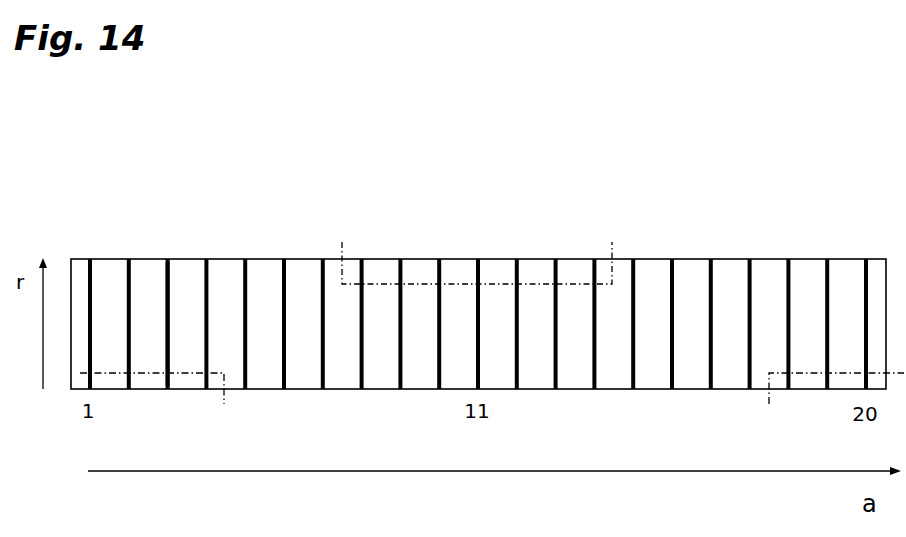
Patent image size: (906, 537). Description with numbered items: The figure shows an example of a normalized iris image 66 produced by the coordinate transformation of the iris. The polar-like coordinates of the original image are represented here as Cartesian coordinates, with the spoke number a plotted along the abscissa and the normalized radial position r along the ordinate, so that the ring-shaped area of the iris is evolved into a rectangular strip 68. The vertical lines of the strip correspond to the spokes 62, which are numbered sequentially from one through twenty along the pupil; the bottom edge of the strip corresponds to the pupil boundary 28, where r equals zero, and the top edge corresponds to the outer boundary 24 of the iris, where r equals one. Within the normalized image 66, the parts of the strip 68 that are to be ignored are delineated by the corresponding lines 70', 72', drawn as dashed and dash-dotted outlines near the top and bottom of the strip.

The outer boundary of the iris 24 is at (230, 258).
The pupil boundary 28 is at (346, 391).
The spoke 62 is at (166, 272).
The normalized iris image 66 is at (500, 166).
The rectangular strip 68 is at (728, 278).
The line 70' is at (477, 235).
The line 72' is at (492, 421).